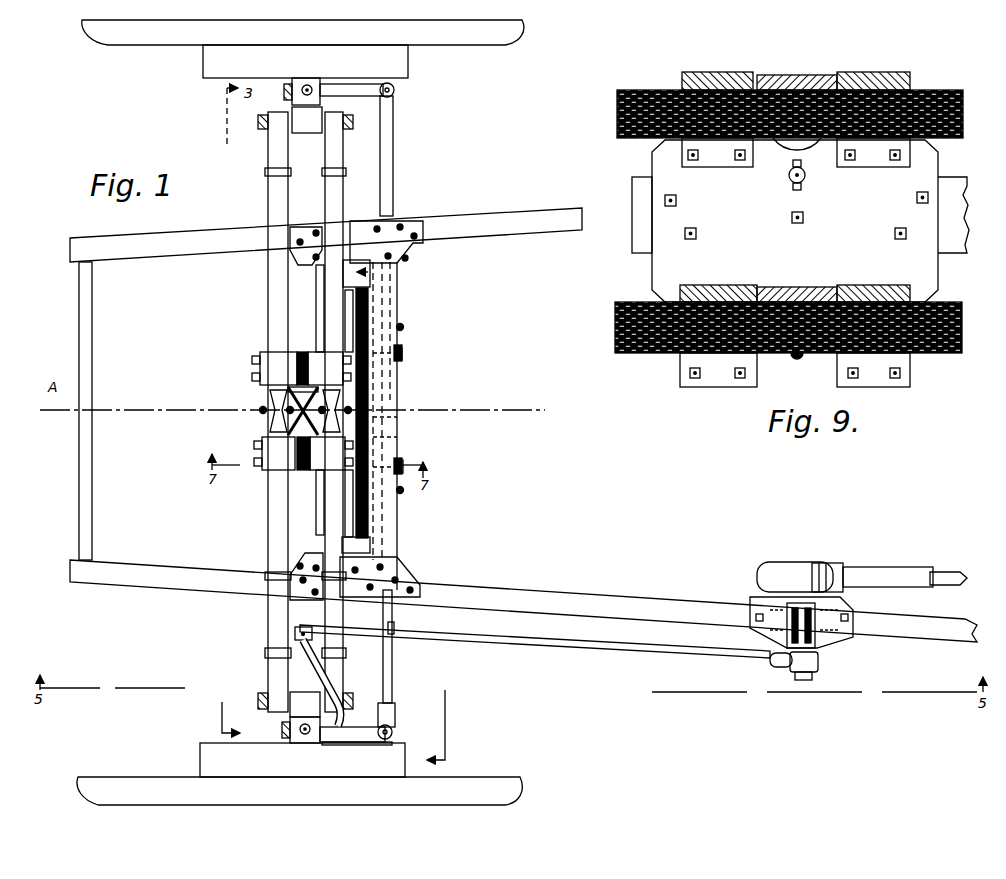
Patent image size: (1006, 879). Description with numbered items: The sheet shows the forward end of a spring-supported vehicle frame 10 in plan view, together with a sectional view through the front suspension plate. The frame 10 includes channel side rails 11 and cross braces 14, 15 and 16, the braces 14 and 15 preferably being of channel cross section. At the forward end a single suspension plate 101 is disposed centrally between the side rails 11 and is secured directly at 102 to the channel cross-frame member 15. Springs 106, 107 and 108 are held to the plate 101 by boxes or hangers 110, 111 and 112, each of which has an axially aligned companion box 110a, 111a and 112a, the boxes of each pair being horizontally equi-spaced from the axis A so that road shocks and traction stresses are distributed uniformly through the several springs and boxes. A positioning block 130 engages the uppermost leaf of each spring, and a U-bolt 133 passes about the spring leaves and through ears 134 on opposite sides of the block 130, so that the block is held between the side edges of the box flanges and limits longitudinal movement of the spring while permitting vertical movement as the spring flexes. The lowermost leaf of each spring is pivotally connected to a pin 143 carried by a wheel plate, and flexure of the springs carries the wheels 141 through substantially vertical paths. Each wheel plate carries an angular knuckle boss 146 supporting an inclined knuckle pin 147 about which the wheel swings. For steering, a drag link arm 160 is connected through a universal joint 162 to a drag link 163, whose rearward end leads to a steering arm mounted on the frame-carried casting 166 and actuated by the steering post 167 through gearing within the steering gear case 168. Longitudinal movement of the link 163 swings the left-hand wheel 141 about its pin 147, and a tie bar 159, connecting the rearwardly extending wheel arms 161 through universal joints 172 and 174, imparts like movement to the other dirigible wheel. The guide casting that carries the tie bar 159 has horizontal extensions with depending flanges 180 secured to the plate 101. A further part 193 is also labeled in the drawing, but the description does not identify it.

In FIG. 1, the frame 10 is at (398, 272).
In FIG. 1, the channel side rails 11 is at (490, 216).
In FIG. 1, the cross brace 14 is at (397, 405).
In FIG. 1, the cross brace 15 is at (320, 512).
In FIG. 9, the cross brace 15 is at (632, 184).
In FIG. 1, the cross brace 16 is at (91, 490).
In FIG. 9, the suspension plate 101 is at (795, 221).
In FIG. 9, the securing connection 102 is at (916, 199).
In FIG. 1, the spring 106 is at (270, 549).
In FIG. 9, the spring 106 is at (938, 92).
In FIG. 1, the spring 107 is at (338, 612).
In FIG. 9, the spring 108 is at (940, 302).
In FIG. 1, the spring box 110 is at (274, 453).
In FIG. 9, the spring box 110 is at (872, 74).
In FIG. 1, the companion spring box 110a is at (275, 368).
In FIG. 9, the companion spring box 110a is at (700, 74).
In FIG. 1, the spring box 111 is at (331, 453).
In FIG. 1, the companion spring box 111a is at (329, 368).
In FIG. 9, the spring box 112 is at (915, 364).
In FIG. 9, the companion spring box 112a is at (678, 360).
In FIG. 1, the positioning block 130 is at (330, 398).
In FIG. 9, the positioning block 130 is at (776, 75).
In FIG. 9, the U-bolt 133 is at (789, 153).
In FIG. 1, the ears 134 is at (263, 412).
In FIG. 1, the wheels 141 is at (300, 412).
In FIG. 1, the pin 143 is at (350, 717).
In FIG. 1, the knuckle boss 146 is at (305, 130).
In FIG. 1, the knuckle pin 147 is at (308, 692).
In FIG. 1, the tie bar 159 is at (394, 626).
In FIG. 1, the drag link arm 160 is at (340, 670).
In FIG. 1, the steering arms 161 is at (346, 90).
In FIG. 1, the universal joint 162 is at (293, 633).
In FIG. 1, the drag link 163 is at (607, 655).
In FIG. 1, the frame carried casting 166 is at (850, 612).
In FIG. 1, the steering post 167 is at (947, 569).
In FIG. 1, the steering gear case 168 is at (785, 566).
In FIG. 1, the universal joints 172 is at (403, 358).
In FIG. 1, the universal joints 174 is at (394, 104).
In FIG. 1, the depending flanges 180 is at (268, 394).
In FIG. 1, the bracket plate 193 is at (395, 218).